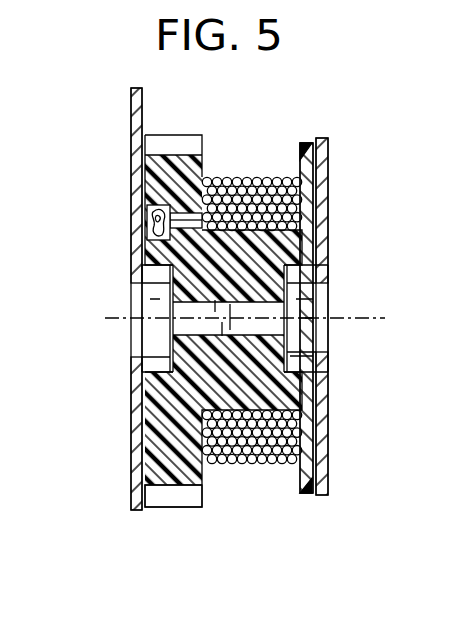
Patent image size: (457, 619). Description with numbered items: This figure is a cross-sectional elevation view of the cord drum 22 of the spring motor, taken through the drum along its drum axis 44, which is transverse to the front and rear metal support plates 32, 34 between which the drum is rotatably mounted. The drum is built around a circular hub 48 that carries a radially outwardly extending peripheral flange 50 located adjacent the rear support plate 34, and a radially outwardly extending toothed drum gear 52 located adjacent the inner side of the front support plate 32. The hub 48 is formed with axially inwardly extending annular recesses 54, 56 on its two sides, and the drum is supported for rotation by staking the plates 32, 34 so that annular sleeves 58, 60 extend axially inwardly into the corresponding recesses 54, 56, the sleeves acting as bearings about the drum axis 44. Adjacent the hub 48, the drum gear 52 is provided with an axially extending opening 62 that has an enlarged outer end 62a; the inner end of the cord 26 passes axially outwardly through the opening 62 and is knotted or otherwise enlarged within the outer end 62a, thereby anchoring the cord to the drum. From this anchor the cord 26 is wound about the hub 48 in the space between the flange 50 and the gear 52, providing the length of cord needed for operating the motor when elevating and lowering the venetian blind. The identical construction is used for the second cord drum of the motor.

The cord drum 22 is at (304, 134).
The cord 26 is at (254, 464).
The front support plate 32 is at (133, 110).
The rear support plate 34 is at (320, 178).
The drum axis 44 is at (372, 316).
The circular hub 48 is at (280, 392).
The peripheral flange 50 is at (310, 475).
The toothed drum gear 52 is at (177, 498).
The annular recess 54 is at (112, 345).
The annular recess 56 is at (320, 352).
The annular sleeve 58 is at (150, 285).
The annular sleeve 60 is at (313, 283).
The axially extending opening 62 is at (178, 212).
The enlarged outer end 62a is at (140, 216).